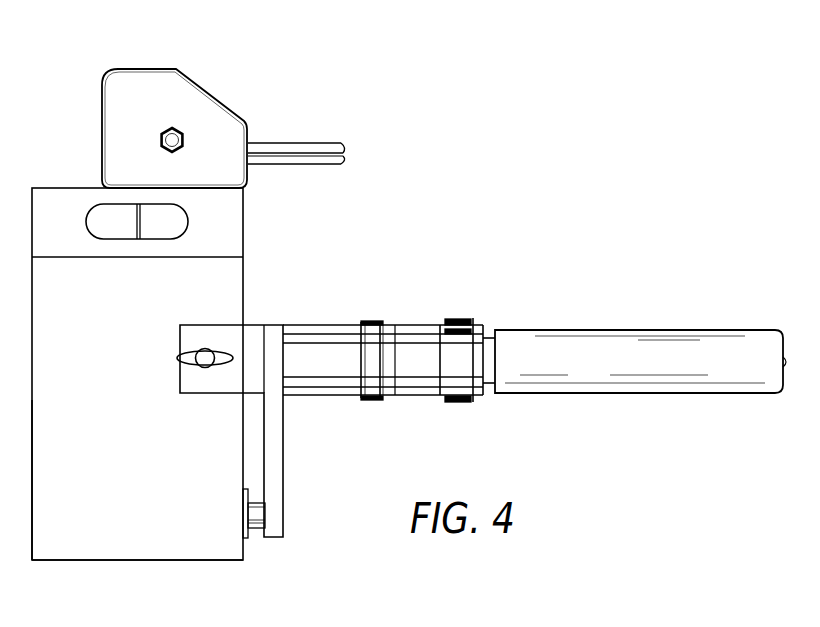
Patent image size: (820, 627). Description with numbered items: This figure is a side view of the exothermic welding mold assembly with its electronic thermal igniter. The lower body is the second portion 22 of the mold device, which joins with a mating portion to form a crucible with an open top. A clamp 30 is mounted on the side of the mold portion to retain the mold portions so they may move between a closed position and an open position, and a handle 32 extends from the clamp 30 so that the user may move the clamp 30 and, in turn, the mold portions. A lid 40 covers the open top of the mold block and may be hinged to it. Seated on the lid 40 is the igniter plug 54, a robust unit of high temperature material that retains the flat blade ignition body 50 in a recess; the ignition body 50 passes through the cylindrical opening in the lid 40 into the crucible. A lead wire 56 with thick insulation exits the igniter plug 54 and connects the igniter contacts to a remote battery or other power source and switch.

The second portion 22 is at (187, 532).
The clamp 30 is at (247, 343).
The handle 32 is at (664, 350).
The lid 40 is at (60, 207).
The flat blade ignition body 50 is at (140, 222).
The igniter plug 54 is at (192, 100).
The lead wire 56 is at (292, 145).